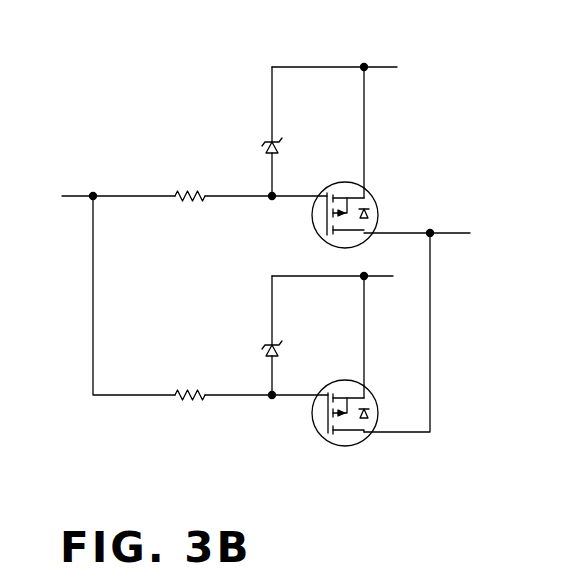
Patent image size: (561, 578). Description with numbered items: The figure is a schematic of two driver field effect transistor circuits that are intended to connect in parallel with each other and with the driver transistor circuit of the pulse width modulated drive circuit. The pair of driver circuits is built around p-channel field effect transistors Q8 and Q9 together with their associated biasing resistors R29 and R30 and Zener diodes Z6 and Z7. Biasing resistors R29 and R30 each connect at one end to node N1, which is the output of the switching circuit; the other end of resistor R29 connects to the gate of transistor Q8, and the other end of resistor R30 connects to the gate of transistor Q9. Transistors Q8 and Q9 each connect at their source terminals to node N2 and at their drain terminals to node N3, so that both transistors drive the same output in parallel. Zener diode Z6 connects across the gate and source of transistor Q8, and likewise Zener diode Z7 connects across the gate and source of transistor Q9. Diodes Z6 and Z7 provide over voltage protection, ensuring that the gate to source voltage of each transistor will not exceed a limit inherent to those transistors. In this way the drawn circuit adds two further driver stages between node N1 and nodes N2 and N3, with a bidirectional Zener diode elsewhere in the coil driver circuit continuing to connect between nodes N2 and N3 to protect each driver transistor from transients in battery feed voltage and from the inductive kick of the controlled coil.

The node N1 is at (118, 277).
The node N2 is at (334, 114).
The node N3 is at (417, 317).
The biasing resistor R29 is at (188, 202).
The biasing resistor R30 is at (194, 401).
The Zener diode Z6 is at (263, 145).
The Zener diode Z7 is at (263, 348).
The p-channel field effect transistor Q8 is at (370, 197).
The p-channel field effect transistor Q9 is at (356, 445).